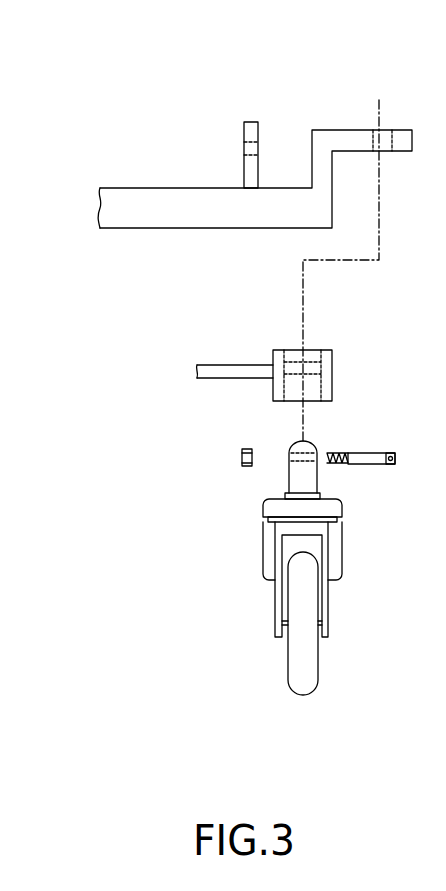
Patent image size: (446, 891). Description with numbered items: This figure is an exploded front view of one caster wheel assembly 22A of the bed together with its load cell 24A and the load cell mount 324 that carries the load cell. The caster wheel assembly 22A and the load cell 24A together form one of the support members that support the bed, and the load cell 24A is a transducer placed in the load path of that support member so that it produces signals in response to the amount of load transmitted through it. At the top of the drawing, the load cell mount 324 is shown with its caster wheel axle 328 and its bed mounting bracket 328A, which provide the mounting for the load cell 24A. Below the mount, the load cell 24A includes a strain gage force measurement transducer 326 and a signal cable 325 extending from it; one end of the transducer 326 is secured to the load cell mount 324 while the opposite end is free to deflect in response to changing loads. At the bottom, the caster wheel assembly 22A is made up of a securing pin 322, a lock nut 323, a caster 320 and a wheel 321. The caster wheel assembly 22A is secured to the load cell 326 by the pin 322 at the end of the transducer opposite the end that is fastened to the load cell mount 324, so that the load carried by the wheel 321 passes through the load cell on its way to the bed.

The load cell mount 324 is at (84, 87).
The bed mounting bracket 328A is at (253, 122).
The caster wheel axle 328 is at (254, 213).
The load cell 24A is at (84, 313).
The signal cable 325 is at (232, 365).
The strain gage force measurement transducer 326 is at (332, 383).
The caster wheel assembly 22A is at (84, 708).
The caster 320 is at (328, 602).
The wheel 321 is at (309, 673).
The securing pin 322 is at (378, 453).
The lock nut 323 is at (242, 465).